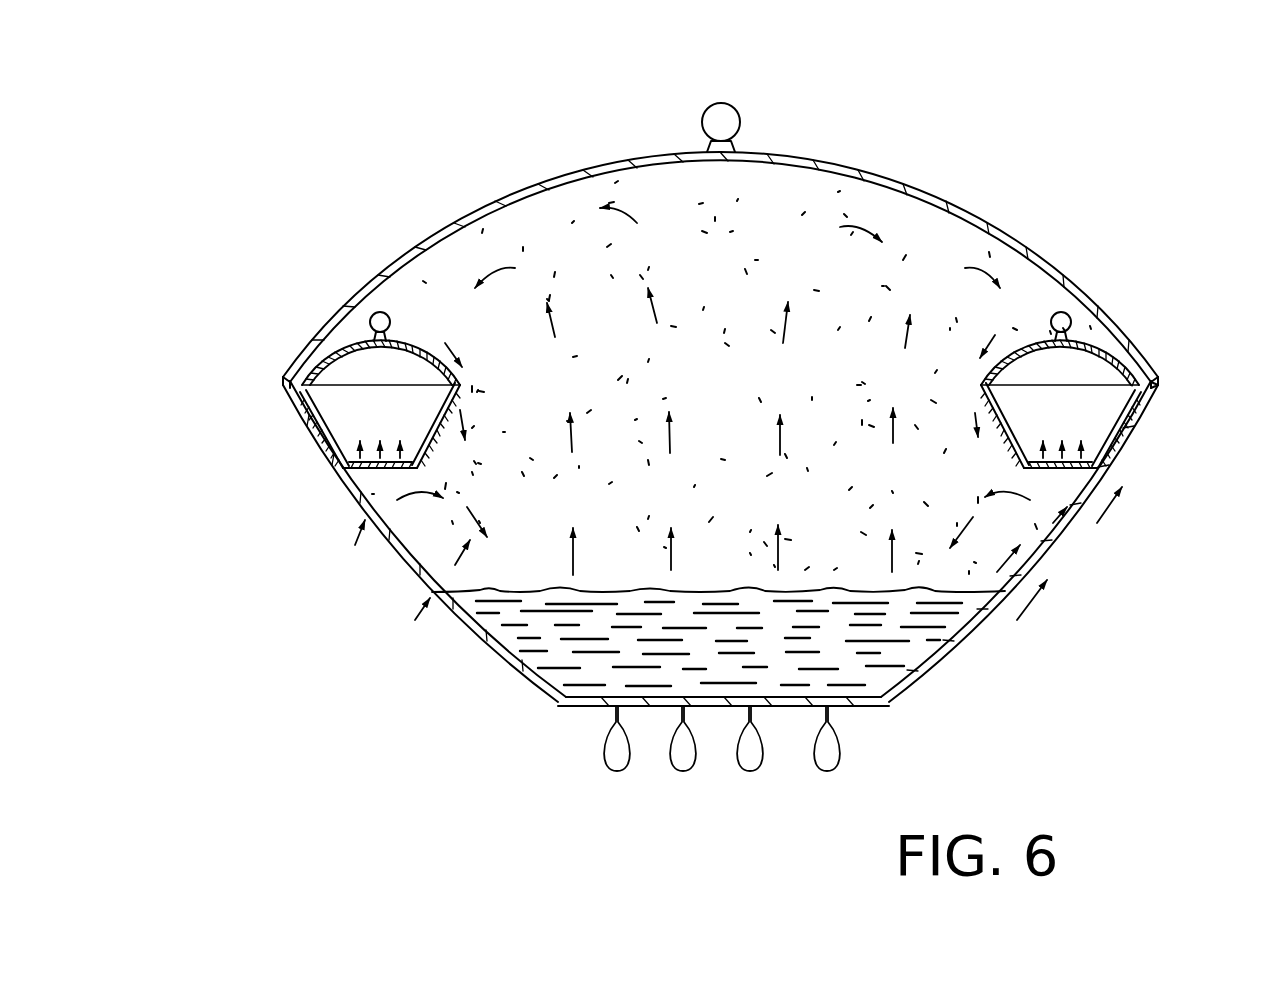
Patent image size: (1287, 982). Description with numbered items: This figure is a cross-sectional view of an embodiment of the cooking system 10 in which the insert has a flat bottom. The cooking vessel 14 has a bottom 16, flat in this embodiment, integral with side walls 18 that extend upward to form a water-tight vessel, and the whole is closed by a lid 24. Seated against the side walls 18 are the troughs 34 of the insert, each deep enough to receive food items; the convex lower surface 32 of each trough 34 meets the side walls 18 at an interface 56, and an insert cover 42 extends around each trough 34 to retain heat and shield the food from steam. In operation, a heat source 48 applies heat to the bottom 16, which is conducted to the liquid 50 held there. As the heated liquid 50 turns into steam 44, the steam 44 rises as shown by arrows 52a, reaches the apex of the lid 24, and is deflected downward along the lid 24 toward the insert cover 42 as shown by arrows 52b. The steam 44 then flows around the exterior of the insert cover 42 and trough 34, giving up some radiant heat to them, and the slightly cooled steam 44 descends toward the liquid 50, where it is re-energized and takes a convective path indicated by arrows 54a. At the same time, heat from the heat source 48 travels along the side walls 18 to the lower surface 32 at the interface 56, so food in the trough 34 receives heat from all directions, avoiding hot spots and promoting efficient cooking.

The cooking system 10 is at (940, 135).
The cooking vessel 14 is at (1113, 472).
The bottom 16 is at (853, 707).
The side walls 18 is at (1043, 563).
The lid 24 is at (945, 200).
The lower surface 32 is at (373, 473).
The trough 34 is at (1160, 393).
The insert cover 42 is at (342, 342).
The steam 44 is at (808, 270).
The heat source 48 is at (823, 774).
The liquid 50 is at (547, 648).
The arrows 52a is at (573, 448).
The arrows 52b is at (487, 267).
The arrows 54a is at (1012, 487).
The interface 56 is at (303, 423).